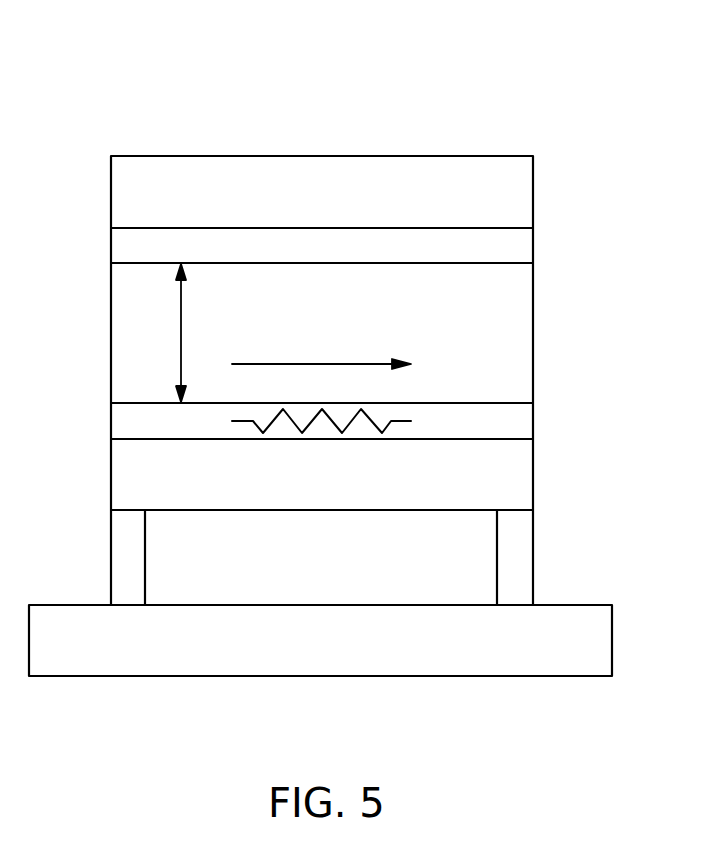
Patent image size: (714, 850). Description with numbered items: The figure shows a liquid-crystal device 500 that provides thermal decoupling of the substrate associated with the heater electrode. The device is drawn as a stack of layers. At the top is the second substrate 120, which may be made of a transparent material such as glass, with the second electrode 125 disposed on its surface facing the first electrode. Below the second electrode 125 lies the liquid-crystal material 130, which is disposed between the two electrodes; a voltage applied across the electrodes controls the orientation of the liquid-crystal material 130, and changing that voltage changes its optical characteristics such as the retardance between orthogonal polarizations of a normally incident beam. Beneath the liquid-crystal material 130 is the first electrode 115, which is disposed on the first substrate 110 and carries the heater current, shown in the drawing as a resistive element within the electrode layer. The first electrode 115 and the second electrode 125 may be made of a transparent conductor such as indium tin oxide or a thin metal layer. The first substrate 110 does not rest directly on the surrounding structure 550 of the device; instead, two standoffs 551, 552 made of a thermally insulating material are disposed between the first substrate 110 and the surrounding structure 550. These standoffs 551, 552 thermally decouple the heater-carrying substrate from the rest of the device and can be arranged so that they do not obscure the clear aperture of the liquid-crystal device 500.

The liquid-crystal device 500 is at (352, 78).
The second substrate 120 is at (457, 168).
The second electrode 125 is at (451, 250).
The liquid-crystal material 130 is at (513, 318).
The first electrode 115 is at (455, 416).
The first substrate 110 is at (505, 475).
The standoff 551 is at (123, 572).
The standoff 552 is at (518, 548).
The surrounding structure 550 is at (420, 662).